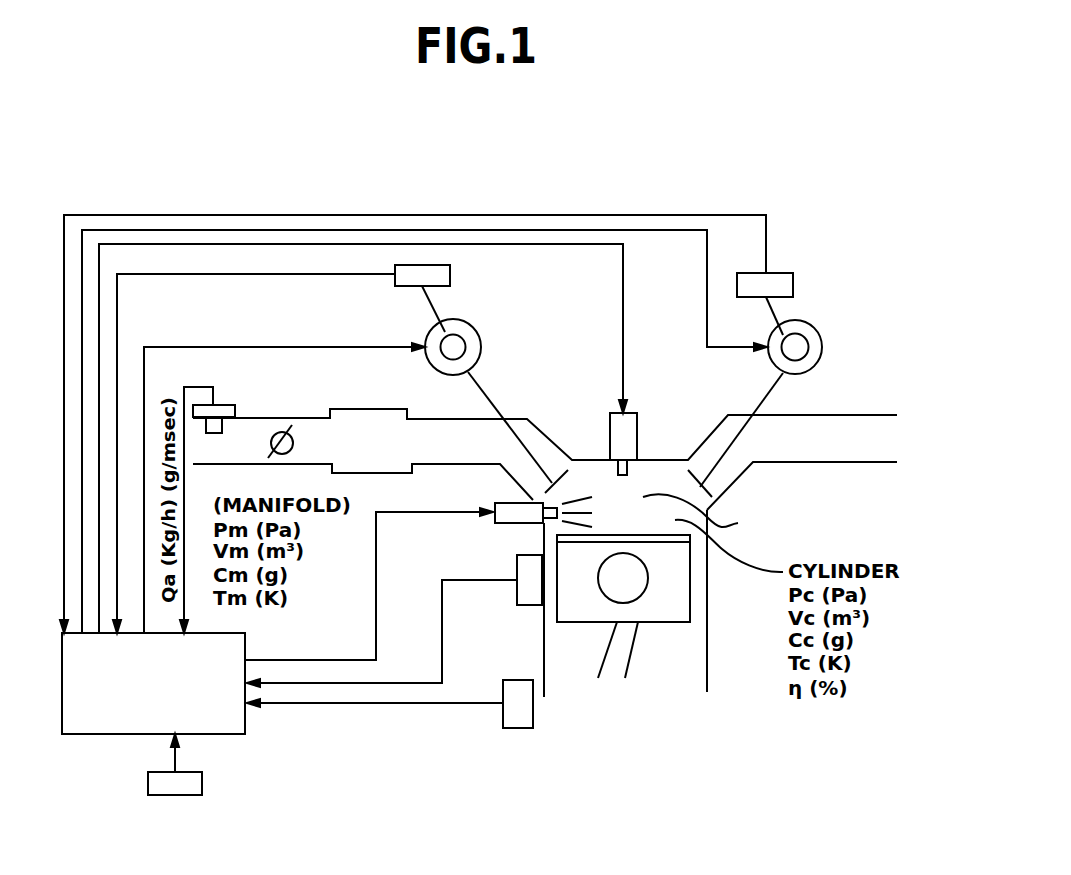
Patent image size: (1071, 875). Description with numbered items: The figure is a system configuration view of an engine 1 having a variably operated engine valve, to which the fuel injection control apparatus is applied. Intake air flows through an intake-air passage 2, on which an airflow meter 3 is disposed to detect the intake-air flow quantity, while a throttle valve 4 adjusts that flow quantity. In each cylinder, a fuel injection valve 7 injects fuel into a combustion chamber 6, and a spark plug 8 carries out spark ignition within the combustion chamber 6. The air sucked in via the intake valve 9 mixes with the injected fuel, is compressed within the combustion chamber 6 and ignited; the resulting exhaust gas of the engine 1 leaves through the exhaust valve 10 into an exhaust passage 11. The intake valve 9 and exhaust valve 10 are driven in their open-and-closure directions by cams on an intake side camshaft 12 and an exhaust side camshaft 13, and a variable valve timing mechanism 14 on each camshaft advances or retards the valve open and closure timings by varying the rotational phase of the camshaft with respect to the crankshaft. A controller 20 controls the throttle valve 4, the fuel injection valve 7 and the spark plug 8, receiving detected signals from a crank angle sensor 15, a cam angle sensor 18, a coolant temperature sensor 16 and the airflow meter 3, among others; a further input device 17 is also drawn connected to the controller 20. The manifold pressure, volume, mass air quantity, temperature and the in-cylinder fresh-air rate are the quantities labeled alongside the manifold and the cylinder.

The engine 1 is at (722, 617).
The intake-air passage 2 is at (458, 428).
The airflow meter 3 is at (223, 405).
The throttle valve 4 is at (288, 430).
The combustion chamber 6 is at (713, 533).
The fuel injection valve 7 is at (498, 525).
The spark plug 8 is at (637, 430).
The intake valve 9 is at (530, 445).
The exhaust valve 10 is at (728, 425).
The exhaust passage 11 is at (795, 450).
The intake side camshaft 12 is at (463, 338).
The exhaust side camshaft 13 is at (808, 337).
The variable valve timing mechanism 14 is at (427, 335).
The crank angle sensor 15 is at (503, 712).
The coolant temperature sensor 16 is at (517, 592).
The input sensor 17 is at (202, 783).
The cam angle sensor 18 is at (450, 280).
The controller 20 is at (98, 737).